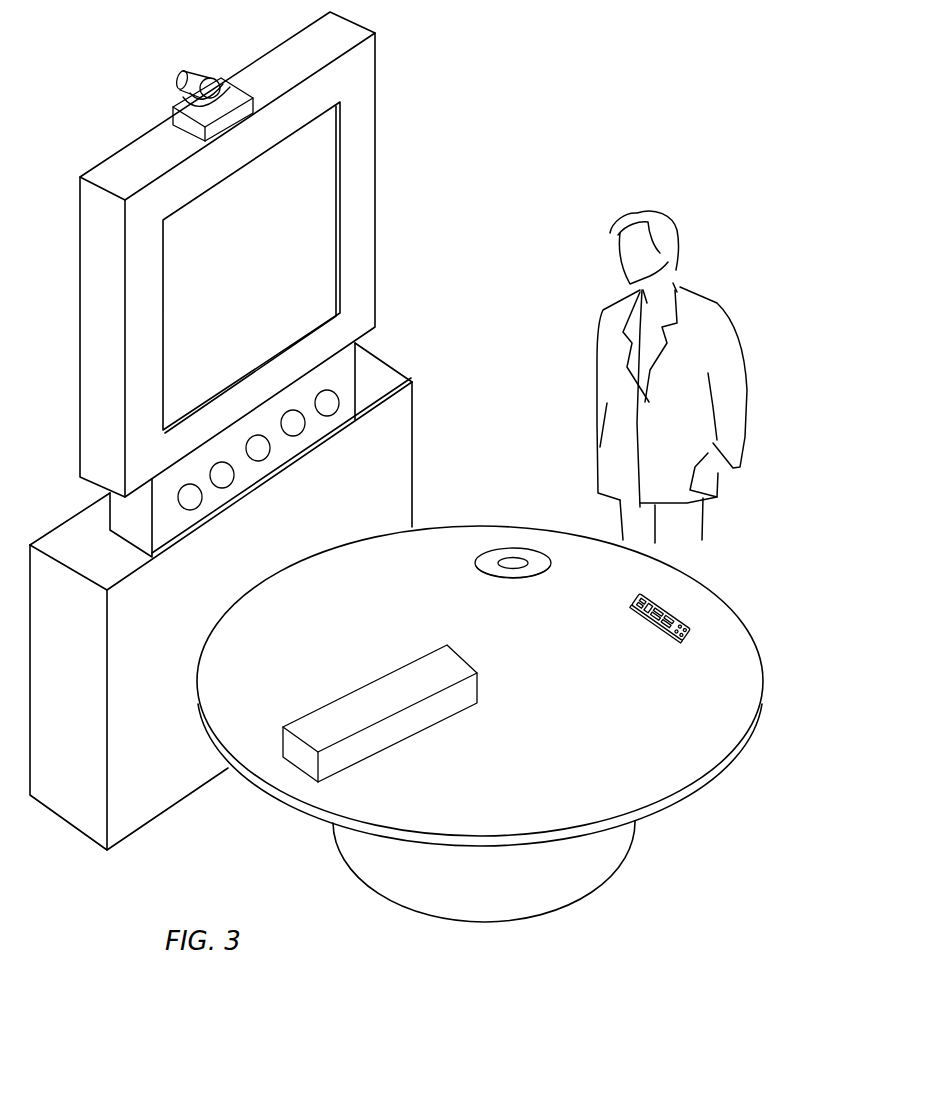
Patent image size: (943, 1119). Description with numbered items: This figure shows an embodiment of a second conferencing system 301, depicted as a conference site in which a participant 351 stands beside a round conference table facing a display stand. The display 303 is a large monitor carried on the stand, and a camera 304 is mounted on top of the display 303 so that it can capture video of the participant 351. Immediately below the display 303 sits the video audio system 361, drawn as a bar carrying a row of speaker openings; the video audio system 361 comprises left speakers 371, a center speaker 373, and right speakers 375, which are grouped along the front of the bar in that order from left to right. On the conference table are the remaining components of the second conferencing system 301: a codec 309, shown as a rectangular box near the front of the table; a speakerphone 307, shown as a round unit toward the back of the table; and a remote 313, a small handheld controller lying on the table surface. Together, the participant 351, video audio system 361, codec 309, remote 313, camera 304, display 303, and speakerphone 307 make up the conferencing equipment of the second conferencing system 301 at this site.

The second conferencing system 301 is at (580, 95).
The display 303 is at (328, 223).
The camera 304 is at (183, 72).
The speakerphone 307 is at (532, 580).
The codec 309 is at (413, 732).
The remote 313 is at (663, 638).
The participant 351 is at (677, 237).
The video audio system 361 is at (256, 450).
The left speakers 371 is at (178, 523).
The center speaker 373 is at (247, 475).
The right speakers 375 is at (283, 450).